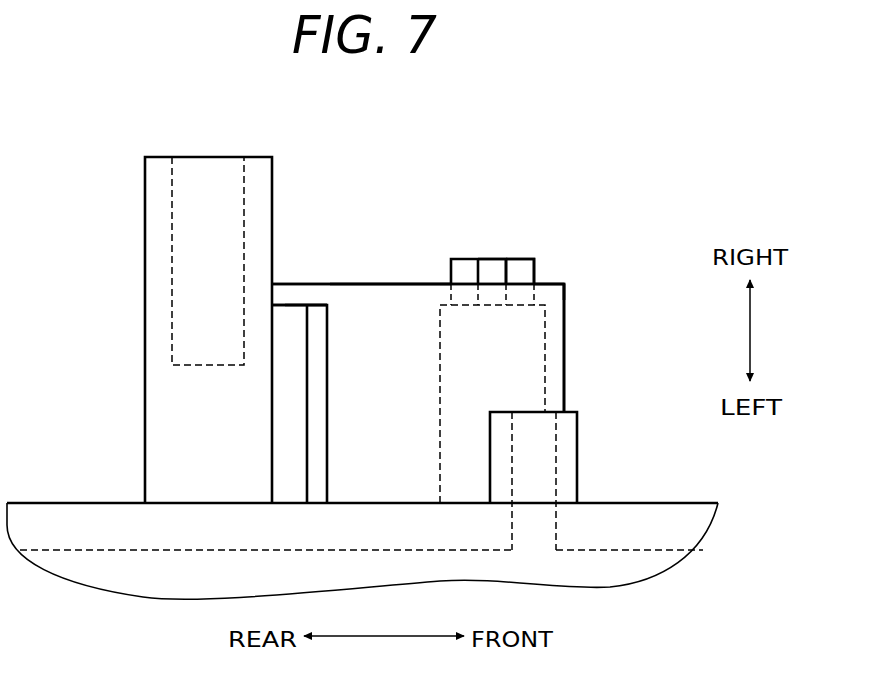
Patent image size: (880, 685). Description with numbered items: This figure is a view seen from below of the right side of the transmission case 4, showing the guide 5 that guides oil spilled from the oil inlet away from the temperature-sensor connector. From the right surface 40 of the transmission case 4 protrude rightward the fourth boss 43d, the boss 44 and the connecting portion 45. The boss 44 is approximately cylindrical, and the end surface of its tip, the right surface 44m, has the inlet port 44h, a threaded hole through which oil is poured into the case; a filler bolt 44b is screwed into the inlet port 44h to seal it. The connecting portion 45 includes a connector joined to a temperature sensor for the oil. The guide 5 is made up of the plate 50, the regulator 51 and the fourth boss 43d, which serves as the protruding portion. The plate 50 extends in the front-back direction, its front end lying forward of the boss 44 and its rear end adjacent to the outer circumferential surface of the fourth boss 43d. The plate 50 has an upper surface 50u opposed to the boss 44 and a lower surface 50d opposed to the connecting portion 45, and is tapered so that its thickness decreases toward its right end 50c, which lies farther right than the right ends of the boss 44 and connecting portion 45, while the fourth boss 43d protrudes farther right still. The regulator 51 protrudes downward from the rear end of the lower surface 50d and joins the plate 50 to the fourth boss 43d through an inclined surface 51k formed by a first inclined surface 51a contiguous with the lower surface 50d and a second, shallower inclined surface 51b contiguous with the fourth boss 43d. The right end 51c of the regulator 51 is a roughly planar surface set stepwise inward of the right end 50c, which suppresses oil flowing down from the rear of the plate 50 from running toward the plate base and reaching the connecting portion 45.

The transmission case 4 is at (611, 183).
The guide 5 is at (336, 166).
The right surface 40 is at (70, 503).
The fourth boss 43d is at (145, 238).
The boss 44 is at (545, 326).
The filler bolt 44b is at (465, 259).
The inlet port 44h is at (490, 305).
The right surface 44m is at (517, 305).
The connecting portion 45 is at (578, 440).
The plate 50 is at (412, 283).
The upper surface 50u is at (397, 302).
The lower surface 50d is at (430, 303).
The right end 50c is at (548, 283).
The regulator 51 is at (340, 363).
The first inclined surface 51a is at (317, 303).
The second inclined surface 51b is at (296, 305).
The right end 51c is at (285, 305).
The inclined surface 51k is at (383, 243).